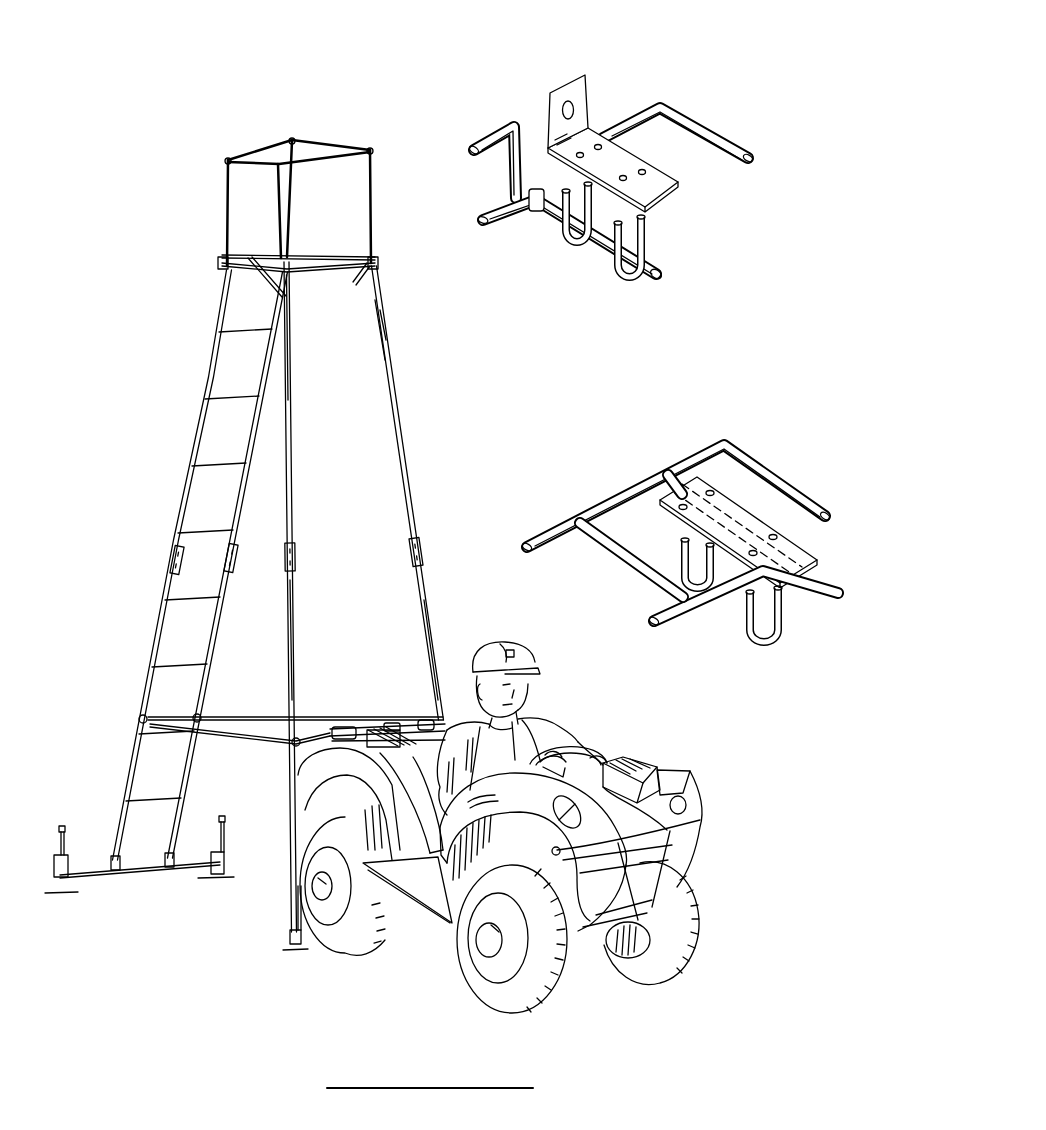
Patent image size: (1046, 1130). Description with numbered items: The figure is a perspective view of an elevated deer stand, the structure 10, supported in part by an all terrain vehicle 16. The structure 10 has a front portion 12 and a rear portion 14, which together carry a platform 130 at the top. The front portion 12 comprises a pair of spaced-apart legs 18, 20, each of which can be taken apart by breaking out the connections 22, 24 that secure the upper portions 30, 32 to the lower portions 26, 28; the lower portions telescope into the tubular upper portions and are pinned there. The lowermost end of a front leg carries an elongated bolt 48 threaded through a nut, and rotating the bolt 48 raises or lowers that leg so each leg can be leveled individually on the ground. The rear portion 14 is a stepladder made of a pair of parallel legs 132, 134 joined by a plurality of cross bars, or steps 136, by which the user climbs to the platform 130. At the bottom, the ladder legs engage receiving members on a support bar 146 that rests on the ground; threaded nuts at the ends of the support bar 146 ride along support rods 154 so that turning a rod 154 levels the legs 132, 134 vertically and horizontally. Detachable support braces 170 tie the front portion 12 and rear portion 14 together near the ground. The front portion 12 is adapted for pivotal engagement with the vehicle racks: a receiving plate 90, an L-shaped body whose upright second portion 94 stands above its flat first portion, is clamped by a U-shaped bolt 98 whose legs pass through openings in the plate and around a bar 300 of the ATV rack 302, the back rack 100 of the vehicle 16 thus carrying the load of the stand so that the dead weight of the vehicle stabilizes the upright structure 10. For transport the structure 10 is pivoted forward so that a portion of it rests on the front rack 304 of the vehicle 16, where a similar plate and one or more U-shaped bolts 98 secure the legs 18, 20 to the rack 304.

The structure 10 is at (410, 303).
The front portion 12 is at (396, 360).
The rear portion 14 is at (208, 350).
The all terrain vehicle 16 is at (442, 920).
The leg 18 is at (290, 420).
The leg 20 is at (398, 440).
The connection 22 is at (297, 557).
The connection 24 is at (422, 552).
The lower portion 26 is at (296, 665).
The lower portion 28 is at (430, 672).
The upper portion 30 is at (290, 395).
The upper portion 32 is at (384, 328).
The elongated bolt 48 is at (294, 928).
The receiving plate 90 is at (668, 172).
The second portion 94 is at (589, 96).
The U-shaped bolt 98 is at (575, 243).
The back rack 100 is at (418, 712).
The platform 130 is at (333, 147).
The leg 132 is at (158, 635).
The leg 134 is at (215, 635).
The cross bars 136 is at (226, 399).
The support bar 146 is at (140, 872).
The support rod 154 is at (63, 852).
The support braces 170 is at (240, 726).
The bar 300 is at (660, 272).
The ATV rack 302 is at (700, 122).
The front rack 304 is at (762, 455).